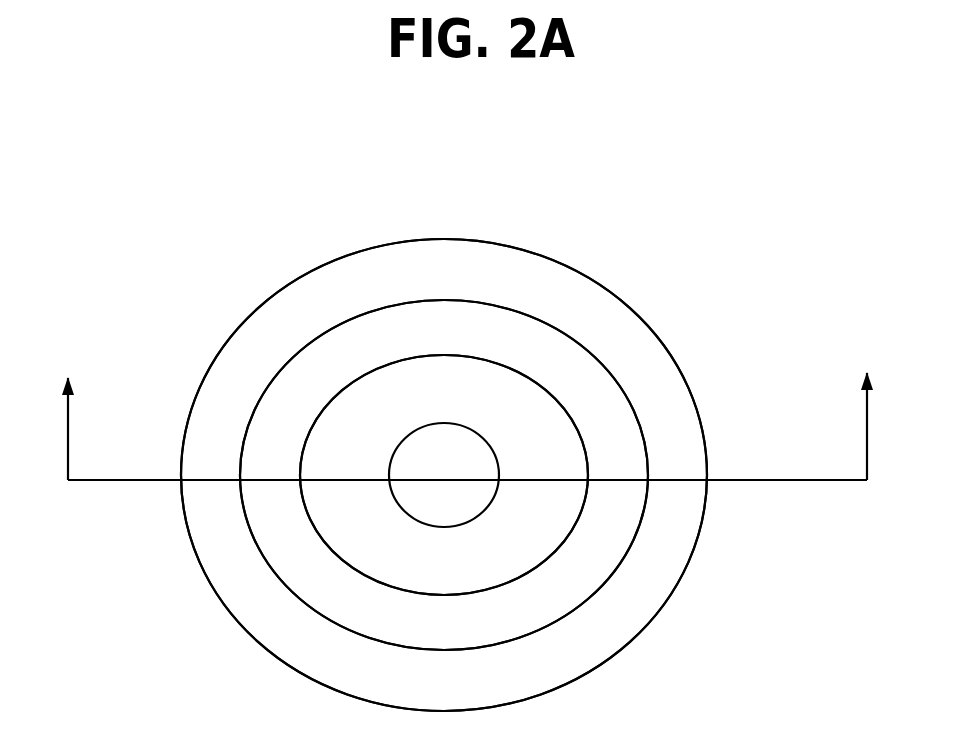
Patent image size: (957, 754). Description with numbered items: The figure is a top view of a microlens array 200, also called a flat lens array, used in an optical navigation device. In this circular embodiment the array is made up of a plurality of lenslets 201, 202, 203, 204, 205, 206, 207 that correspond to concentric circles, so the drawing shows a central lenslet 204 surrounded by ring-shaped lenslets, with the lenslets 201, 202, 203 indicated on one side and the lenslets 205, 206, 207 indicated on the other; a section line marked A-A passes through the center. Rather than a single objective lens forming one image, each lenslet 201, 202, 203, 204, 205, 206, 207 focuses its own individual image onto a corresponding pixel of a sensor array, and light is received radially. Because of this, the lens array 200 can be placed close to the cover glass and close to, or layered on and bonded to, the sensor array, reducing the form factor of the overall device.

The microlens array 200 is at (107, 139).
The lenslet 201 is at (238, 338).
The lenslet 202 is at (328, 362).
The lenslet 203 is at (382, 408).
The lenslet 204 is at (445, 455).
The lenslet 205 is at (497, 408).
The lenslet 206 is at (572, 372).
The lenslet 207 is at (662, 375).